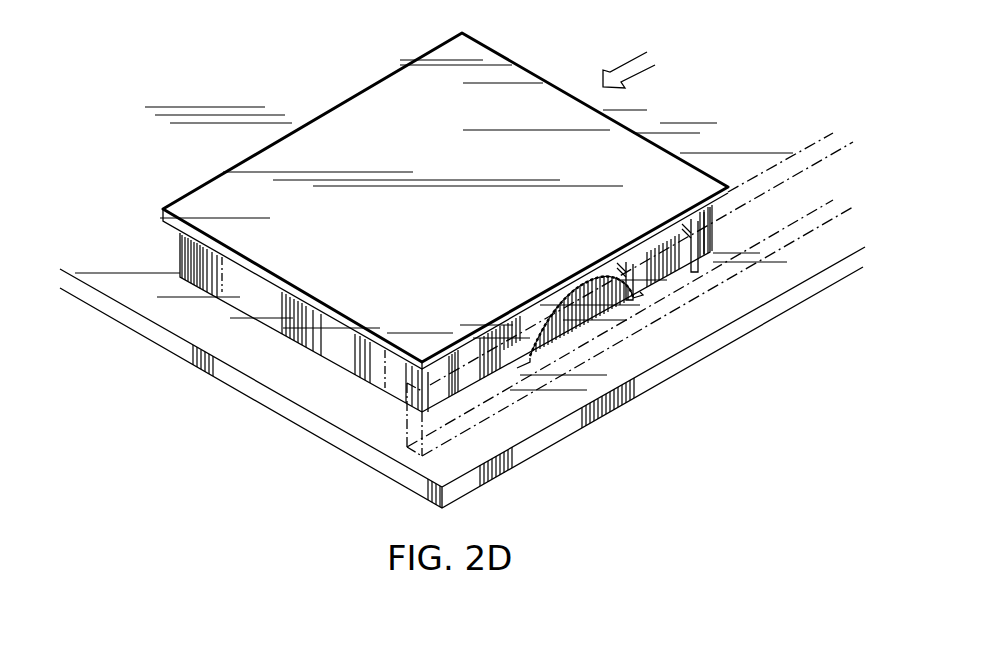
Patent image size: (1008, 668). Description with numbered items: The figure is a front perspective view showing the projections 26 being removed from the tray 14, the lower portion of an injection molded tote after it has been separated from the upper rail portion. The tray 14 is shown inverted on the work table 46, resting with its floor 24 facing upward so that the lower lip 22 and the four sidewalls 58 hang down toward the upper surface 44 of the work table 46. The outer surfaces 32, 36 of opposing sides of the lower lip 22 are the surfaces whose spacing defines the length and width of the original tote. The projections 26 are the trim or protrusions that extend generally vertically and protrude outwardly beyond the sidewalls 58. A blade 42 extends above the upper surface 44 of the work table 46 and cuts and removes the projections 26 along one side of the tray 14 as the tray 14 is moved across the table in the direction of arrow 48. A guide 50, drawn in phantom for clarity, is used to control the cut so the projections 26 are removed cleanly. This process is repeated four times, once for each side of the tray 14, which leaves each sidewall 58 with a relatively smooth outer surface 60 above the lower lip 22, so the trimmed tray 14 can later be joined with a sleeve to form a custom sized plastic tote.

The tray 14 is at (497, 235).
The lower lip 22 is at (428, 298).
The floor 24 is at (450, 227).
The projections 26 is at (683, 272).
The outer surface of lower lip 32 is at (460, 213).
The outer surface of lower lip 36 is at (358, 92).
The blade 42 is at (580, 326).
The upper surface 44 is at (462, 307).
The work table 46 is at (277, 403).
The arrow 48 is at (623, 67).
The guide 50 is at (817, 140).
The sidewalls 58 is at (473, 380).
The outer surface 60 is at (275, 304).